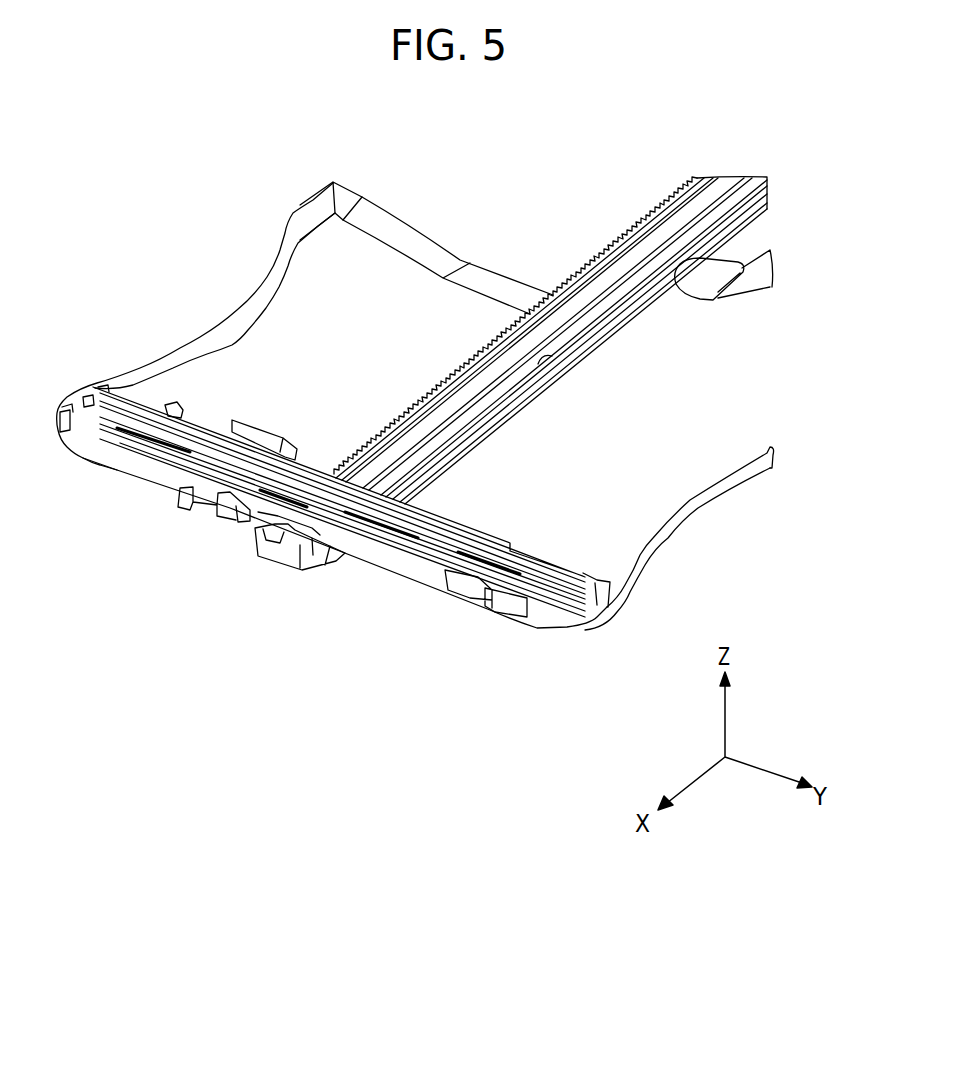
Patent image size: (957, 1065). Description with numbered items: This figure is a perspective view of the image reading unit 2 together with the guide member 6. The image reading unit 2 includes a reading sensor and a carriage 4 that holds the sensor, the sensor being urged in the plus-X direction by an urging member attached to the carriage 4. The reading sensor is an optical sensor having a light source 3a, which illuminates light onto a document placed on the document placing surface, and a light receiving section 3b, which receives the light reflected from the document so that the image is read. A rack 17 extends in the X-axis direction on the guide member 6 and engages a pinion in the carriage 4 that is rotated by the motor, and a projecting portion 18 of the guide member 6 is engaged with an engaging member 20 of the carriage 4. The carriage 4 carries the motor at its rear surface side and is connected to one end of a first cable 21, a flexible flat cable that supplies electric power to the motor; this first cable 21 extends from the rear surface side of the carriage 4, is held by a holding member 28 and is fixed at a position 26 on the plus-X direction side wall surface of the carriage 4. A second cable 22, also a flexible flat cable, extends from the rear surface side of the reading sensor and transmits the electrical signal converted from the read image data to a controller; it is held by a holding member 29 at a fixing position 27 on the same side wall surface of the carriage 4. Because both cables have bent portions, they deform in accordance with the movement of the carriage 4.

The image reading unit 2 is at (478, 521).
The light source 3a is at (204, 432).
The light receiving section 3b is at (177, 450).
The carriage 4 is at (395, 562).
The guide member 6 is at (491, 359).
The rack 17 is at (633, 225).
The projecting portion 18 is at (693, 220).
The engaging member 20 is at (286, 548).
The first cable 21 is at (687, 515).
The second cable 22 is at (201, 336).
The position 26 is at (473, 632).
The fixing position 27 is at (189, 543).
The holding member 28 is at (485, 610).
The holding member 29 is at (187, 520).